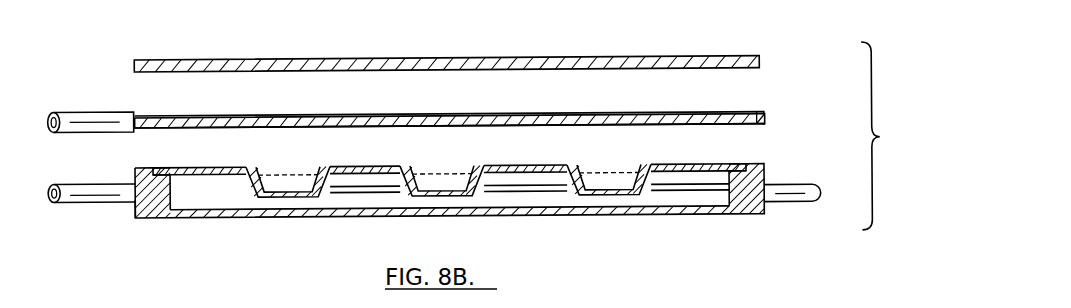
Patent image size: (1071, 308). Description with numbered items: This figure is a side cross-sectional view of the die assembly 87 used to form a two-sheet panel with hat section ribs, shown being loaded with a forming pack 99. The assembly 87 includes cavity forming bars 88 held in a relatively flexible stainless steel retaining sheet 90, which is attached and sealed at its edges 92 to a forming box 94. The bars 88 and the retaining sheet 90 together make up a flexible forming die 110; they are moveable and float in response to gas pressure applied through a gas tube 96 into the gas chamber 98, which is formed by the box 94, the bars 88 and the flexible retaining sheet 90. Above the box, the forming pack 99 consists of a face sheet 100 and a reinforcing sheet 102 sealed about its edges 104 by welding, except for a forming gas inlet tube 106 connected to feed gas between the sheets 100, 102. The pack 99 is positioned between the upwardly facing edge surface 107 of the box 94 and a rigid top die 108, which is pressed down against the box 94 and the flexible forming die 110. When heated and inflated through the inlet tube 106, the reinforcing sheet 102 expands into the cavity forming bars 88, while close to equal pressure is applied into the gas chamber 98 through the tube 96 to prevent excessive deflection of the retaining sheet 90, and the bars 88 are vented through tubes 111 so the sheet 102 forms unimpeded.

The die assembly 87 is at (888, 136).
The cavity forming bars 88 is at (265, 194).
The retaining sheet 90 is at (228, 168).
The edges 92 is at (160, 168).
The forming box 94 is at (135, 206).
The gas tube 96 is at (83, 184).
The gas chamber 98 is at (213, 193).
The forming pack 99 is at (502, 113).
The face sheet 100 is at (272, 118).
The reinforcing sheet 102 is at (576, 130).
The edges 104 is at (766, 122).
The forming gas inlet tube 106 is at (120, 112).
The upwardly facing edge surface 107 is at (143, 168).
The rigid top die 108 is at (528, 60).
The flexible forming die 110 is at (490, 191).
The tubes 111 is at (373, 197).